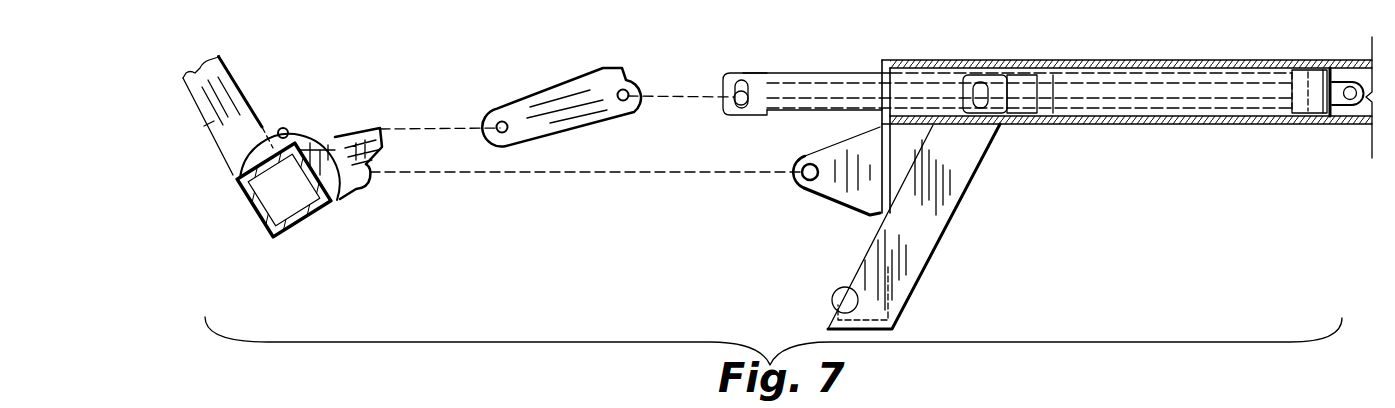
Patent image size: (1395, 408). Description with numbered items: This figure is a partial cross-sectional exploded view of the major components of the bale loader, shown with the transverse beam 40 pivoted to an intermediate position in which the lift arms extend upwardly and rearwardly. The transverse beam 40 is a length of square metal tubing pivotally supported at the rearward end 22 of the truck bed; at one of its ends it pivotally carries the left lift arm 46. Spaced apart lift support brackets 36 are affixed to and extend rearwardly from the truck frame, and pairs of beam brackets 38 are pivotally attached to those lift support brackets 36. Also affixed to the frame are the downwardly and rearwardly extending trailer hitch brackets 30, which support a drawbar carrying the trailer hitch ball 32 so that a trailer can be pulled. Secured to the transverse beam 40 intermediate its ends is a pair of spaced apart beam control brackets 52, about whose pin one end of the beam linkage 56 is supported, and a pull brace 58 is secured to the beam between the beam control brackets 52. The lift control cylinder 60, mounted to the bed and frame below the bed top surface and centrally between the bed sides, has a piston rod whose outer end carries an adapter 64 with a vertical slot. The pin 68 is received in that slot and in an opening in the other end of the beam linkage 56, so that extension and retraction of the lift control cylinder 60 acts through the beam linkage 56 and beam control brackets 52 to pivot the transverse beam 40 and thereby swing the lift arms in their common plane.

The rearward end 22 is at (878, 58).
The trailer hitch bracket 30 is at (917, 227).
The trailer hitch ball 32 is at (840, 287).
The lift support bracket 36 is at (837, 195).
The beam bracket 38 is at (350, 198).
The transverse beam 40 is at (257, 214).
The left lift arm 46 is at (222, 122).
The beam control bracket 52 is at (291, 128).
The beam linkage 56 is at (550, 105).
The pull brace 58 is at (362, 143).
The lift control cylinder 60 is at (1186, 127).
The adapter 64 is at (757, 78).
The pin 68 is at (740, 82).